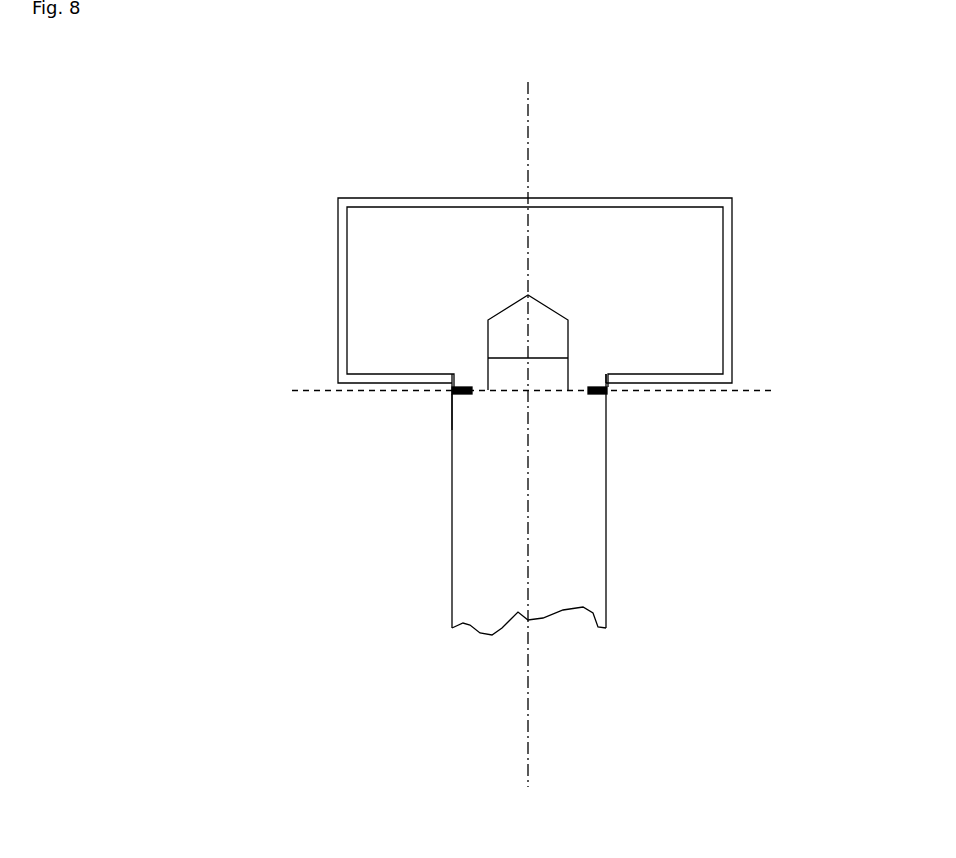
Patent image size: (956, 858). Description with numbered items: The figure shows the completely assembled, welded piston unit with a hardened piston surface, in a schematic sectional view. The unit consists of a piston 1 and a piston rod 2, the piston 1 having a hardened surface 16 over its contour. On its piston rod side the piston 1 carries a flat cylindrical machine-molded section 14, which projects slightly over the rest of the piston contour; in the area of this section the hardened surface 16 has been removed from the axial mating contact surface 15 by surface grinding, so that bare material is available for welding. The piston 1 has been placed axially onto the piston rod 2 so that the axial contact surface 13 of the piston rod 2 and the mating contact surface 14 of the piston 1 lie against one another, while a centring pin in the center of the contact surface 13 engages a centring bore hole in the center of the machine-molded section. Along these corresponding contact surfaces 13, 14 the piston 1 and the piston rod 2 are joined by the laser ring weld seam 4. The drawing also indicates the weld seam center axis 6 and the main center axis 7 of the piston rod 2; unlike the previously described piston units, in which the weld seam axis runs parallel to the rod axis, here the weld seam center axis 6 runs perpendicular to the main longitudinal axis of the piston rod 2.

The piston 1 is at (379, 264).
The piston rod 2 is at (490, 612).
The laser ring weld seam 4 is at (590, 397).
The weld seam center axis 6 is at (737, 392).
The main center axis 7 is at (528, 752).
The axial contact surface 13 is at (473, 396).
The flat cylindrical machine-molded section 14 is at (473, 398).
The axial mating contact surface 15 is at (605, 372).
The hardened surface 16 is at (337, 202).